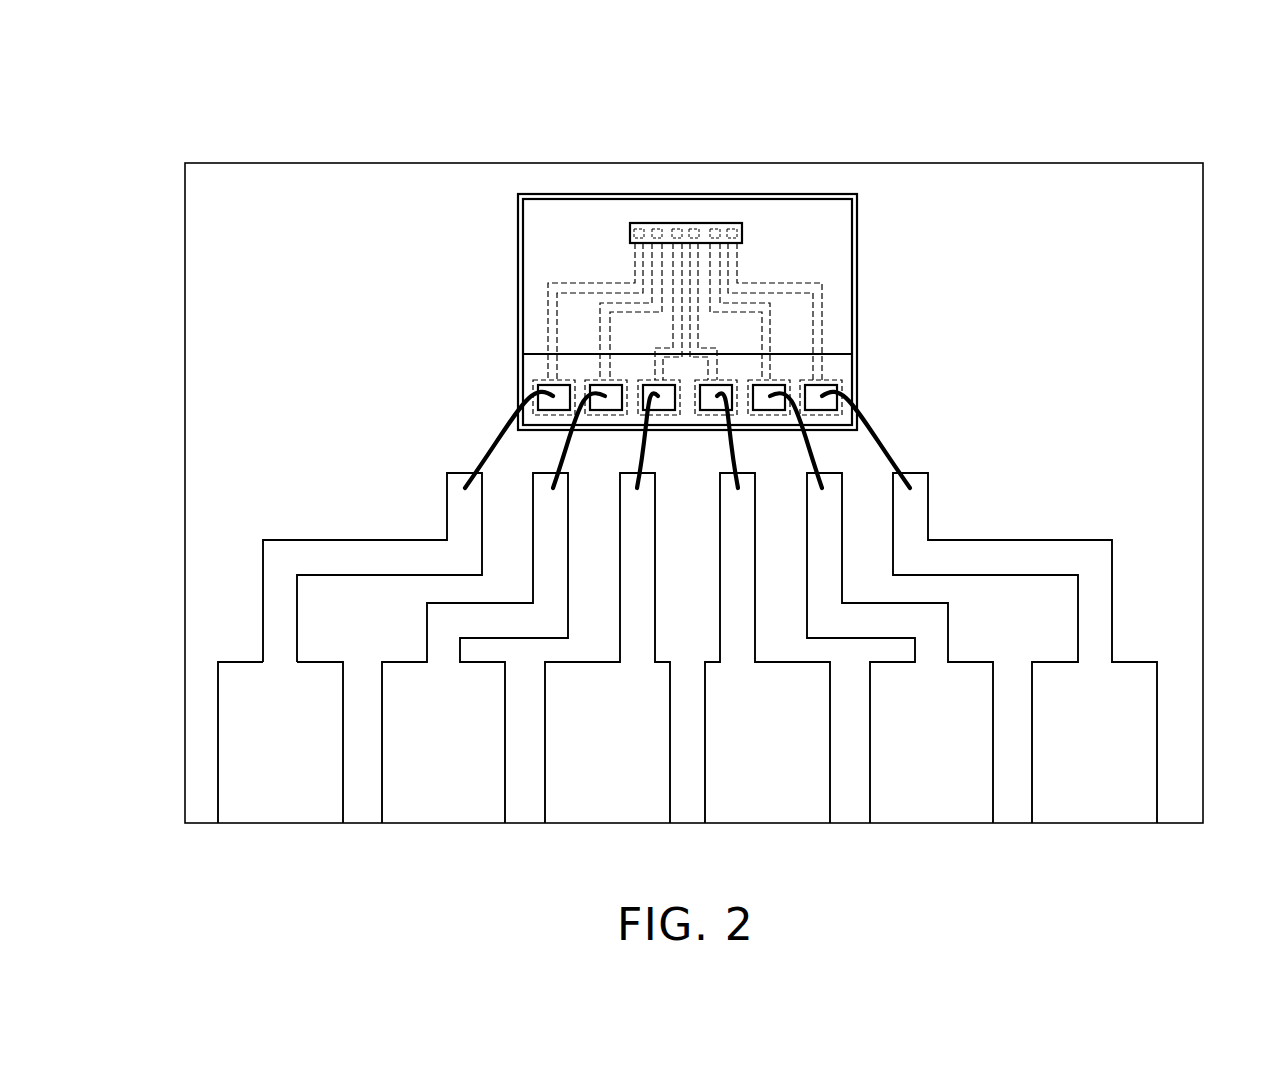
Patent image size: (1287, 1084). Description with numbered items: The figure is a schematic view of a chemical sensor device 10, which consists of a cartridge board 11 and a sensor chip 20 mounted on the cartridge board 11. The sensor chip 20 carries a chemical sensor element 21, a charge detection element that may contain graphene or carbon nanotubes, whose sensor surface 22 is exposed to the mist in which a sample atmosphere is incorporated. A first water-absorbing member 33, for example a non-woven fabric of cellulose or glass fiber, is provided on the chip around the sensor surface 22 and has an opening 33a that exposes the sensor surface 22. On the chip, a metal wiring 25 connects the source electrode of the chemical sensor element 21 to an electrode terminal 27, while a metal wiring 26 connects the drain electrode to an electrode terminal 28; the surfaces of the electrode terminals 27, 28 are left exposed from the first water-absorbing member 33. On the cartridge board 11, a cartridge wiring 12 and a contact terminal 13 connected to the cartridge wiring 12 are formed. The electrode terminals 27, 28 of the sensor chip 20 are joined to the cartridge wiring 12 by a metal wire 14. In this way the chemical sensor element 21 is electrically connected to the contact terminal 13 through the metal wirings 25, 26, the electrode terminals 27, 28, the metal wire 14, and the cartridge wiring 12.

The chemical sensor device 10 is at (1123, 134).
The cartridge board 11 is at (1173, 439).
The cartridge wiring 12 is at (312, 560).
The contact terminal 13 is at (280, 787).
The metal wire 14 is at (497, 437).
The sensor chip 20 is at (790, 192).
The chemical sensor element 21 is at (697, 220).
The sensor surface 22 is at (640, 223).
The metal wiring 25 is at (552, 322).
The metal wiring 26 is at (602, 320).
The electrode terminal 27 is at (563, 402).
The electrode terminal 28 is at (617, 403).
The first water-absorbing member 33 is at (827, 252).
The opening 33a is at (665, 223).